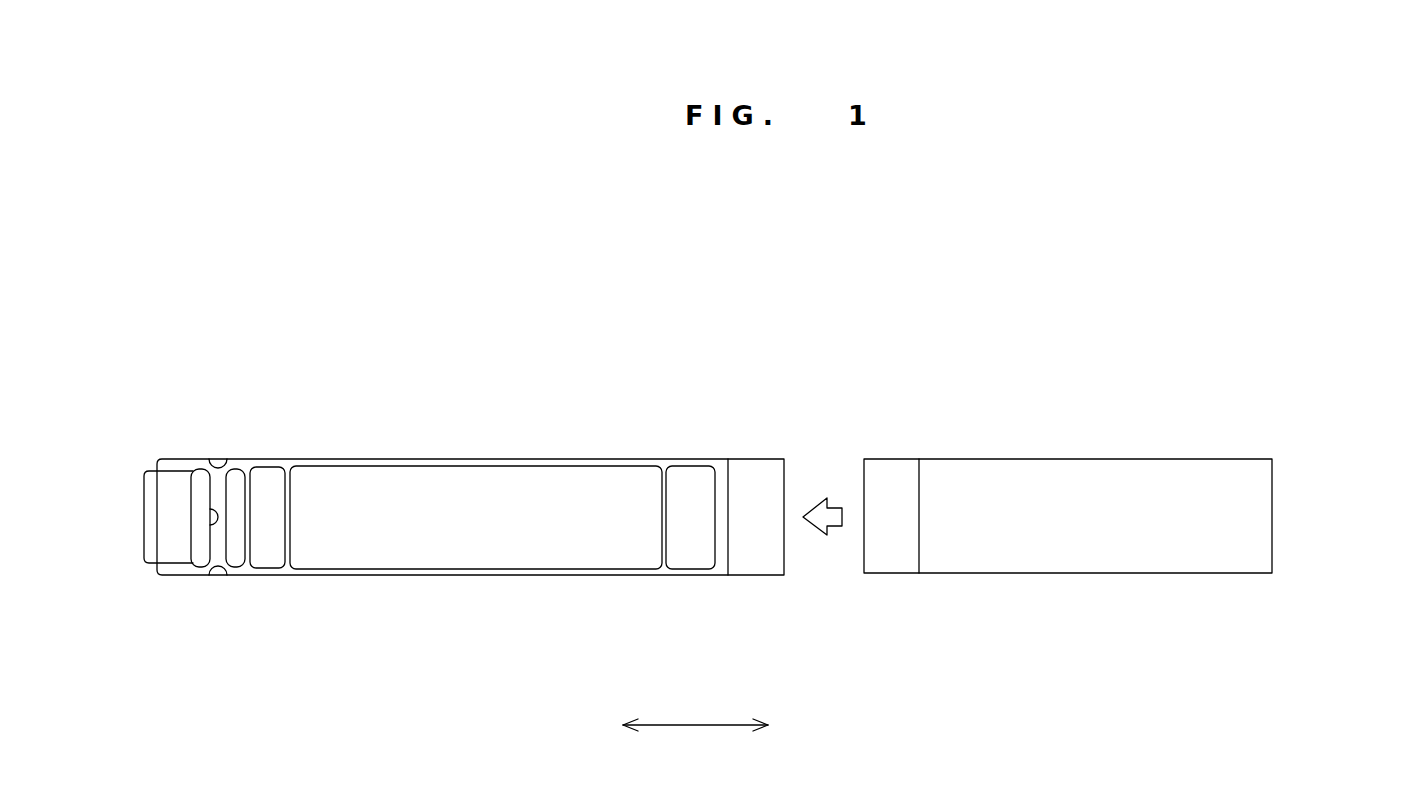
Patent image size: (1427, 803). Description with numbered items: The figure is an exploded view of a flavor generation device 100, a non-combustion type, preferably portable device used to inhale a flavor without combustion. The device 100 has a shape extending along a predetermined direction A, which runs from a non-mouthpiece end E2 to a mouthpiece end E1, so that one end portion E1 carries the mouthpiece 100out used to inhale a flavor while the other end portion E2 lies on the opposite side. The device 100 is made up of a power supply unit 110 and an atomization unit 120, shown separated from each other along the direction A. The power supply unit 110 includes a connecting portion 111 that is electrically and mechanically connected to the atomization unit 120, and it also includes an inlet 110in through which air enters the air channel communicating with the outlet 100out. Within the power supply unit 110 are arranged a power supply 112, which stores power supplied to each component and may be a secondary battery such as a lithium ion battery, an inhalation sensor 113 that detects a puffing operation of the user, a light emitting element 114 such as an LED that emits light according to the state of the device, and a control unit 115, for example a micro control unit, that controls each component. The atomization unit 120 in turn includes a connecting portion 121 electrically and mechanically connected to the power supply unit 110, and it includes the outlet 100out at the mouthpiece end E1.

The flavor generation device 100 is at (855, 343).
The power supply unit 110 is at (528, 440).
The inlet / slit of first unit 110in is at (665, 459).
The connecting portion 111 is at (758, 560).
The power supply 112 is at (507, 558).
The inhalation sensor 113 is at (690, 560).
The light emitting element 114 is at (218, 463).
The control unit 115 is at (268, 560).
The atomization unit 120 is at (1107, 438).
The connecting portion 121 is at (890, 558).
The mouthpiece end E1 is at (1272, 533).
The non-mouthpiece end E2 is at (144, 503).
The outlet 100out is at (1290, 487).
The predetermined direction A is at (695, 740).